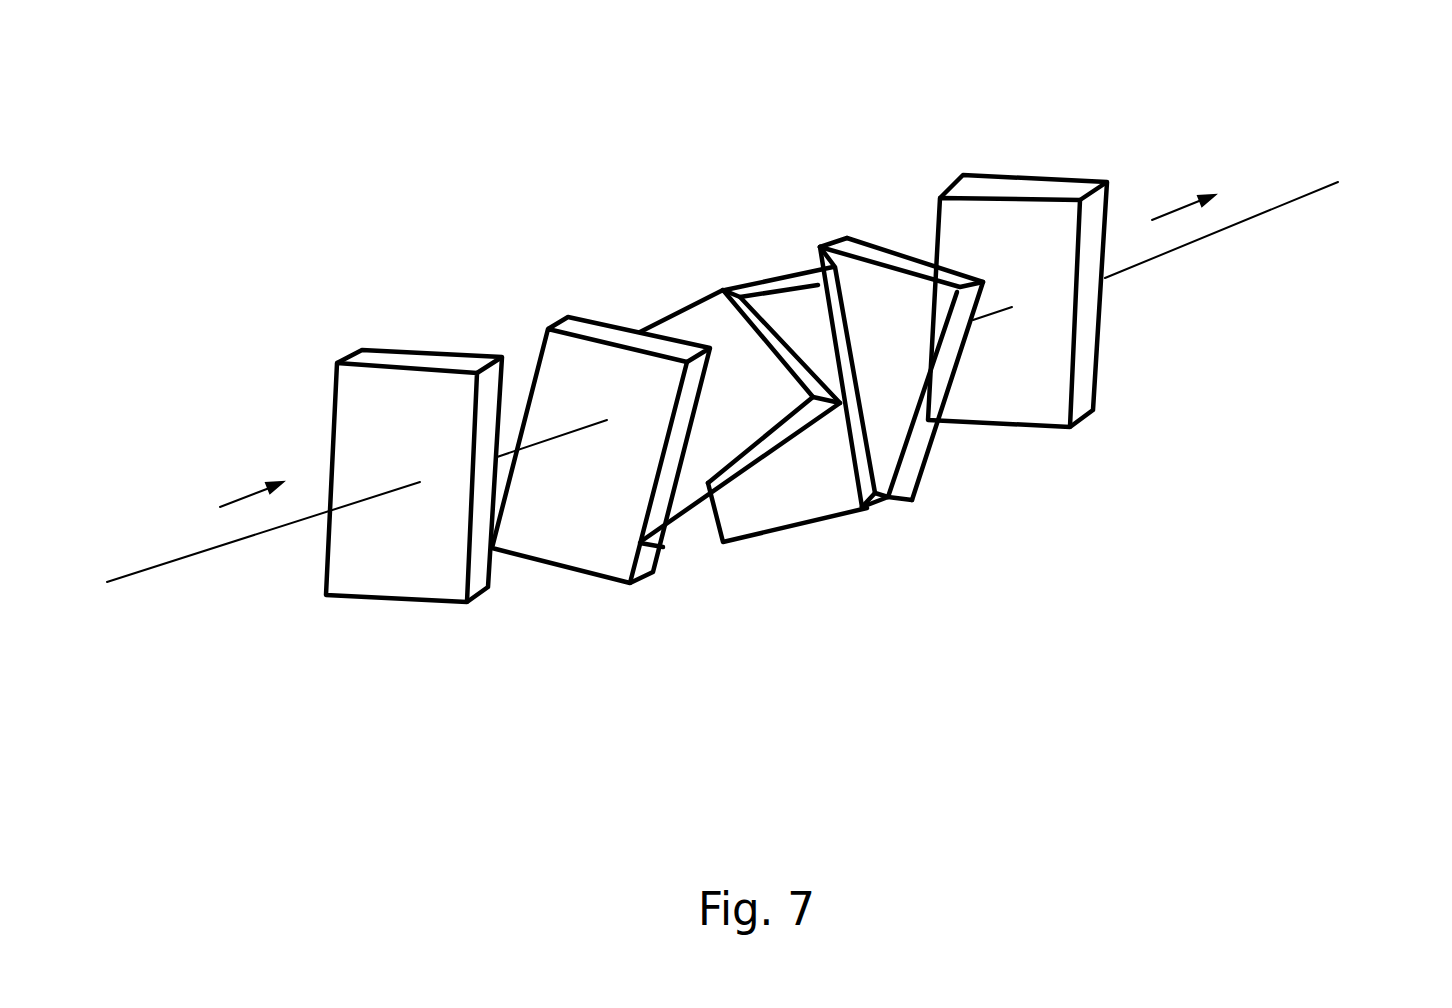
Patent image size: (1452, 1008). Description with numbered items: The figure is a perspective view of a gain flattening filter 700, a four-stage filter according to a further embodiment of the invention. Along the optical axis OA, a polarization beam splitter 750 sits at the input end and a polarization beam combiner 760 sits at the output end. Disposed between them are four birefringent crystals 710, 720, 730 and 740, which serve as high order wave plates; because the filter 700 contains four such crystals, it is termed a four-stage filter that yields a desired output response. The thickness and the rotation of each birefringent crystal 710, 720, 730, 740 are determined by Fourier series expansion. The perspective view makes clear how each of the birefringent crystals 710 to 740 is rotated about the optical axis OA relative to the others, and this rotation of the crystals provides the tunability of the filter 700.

The gain flattening filter 700 is at (568, 230).
The birefringent crystal 710 is at (565, 570).
The birefringent crystal 720 is at (707, 420).
The birefringent crystal 730 is at (797, 470).
The birefringent crystal 740 is at (898, 395).
The polarization beam splitter 750 is at (357, 570).
The polarization beam combiner 760 is at (1037, 333).